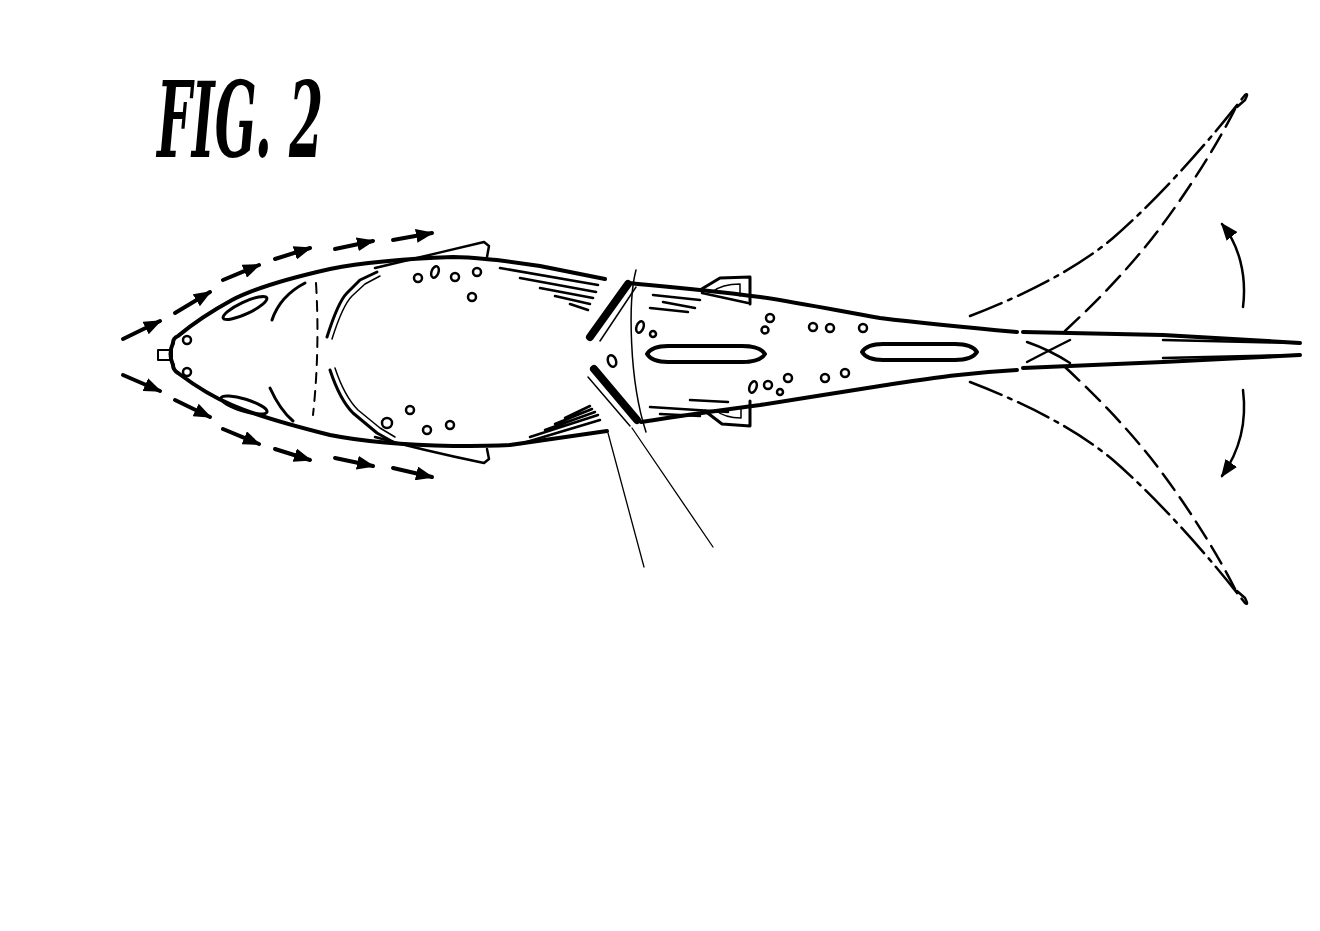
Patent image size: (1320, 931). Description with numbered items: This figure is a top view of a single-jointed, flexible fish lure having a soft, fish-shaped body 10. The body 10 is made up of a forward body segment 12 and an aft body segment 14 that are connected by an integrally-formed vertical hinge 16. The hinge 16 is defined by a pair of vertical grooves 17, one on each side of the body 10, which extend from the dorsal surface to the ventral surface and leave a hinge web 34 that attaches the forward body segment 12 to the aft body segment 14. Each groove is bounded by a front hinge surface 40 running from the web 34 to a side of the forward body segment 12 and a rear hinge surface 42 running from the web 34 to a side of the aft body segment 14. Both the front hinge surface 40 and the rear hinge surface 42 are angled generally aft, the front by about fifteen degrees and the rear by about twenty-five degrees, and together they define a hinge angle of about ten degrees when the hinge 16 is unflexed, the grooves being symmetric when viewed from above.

The fish-shaped body 10 is at (518, 63).
The forward body segment 12 is at (507, 262).
The aft body segment 14 is at (889, 320).
The vertical hinge 16 is at (637, 348).
The vertical grooves 17 is at (626, 267).
The hinge web 34 is at (600, 349).
The front hinge surfaces 40 is at (573, 437).
The rear hinge surfaces 42 is at (620, 397).